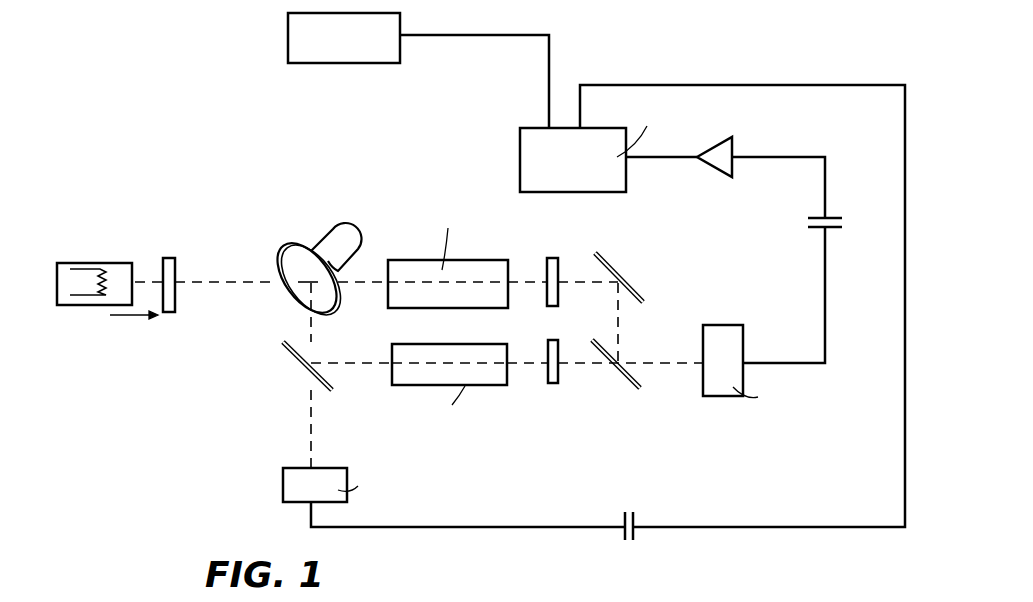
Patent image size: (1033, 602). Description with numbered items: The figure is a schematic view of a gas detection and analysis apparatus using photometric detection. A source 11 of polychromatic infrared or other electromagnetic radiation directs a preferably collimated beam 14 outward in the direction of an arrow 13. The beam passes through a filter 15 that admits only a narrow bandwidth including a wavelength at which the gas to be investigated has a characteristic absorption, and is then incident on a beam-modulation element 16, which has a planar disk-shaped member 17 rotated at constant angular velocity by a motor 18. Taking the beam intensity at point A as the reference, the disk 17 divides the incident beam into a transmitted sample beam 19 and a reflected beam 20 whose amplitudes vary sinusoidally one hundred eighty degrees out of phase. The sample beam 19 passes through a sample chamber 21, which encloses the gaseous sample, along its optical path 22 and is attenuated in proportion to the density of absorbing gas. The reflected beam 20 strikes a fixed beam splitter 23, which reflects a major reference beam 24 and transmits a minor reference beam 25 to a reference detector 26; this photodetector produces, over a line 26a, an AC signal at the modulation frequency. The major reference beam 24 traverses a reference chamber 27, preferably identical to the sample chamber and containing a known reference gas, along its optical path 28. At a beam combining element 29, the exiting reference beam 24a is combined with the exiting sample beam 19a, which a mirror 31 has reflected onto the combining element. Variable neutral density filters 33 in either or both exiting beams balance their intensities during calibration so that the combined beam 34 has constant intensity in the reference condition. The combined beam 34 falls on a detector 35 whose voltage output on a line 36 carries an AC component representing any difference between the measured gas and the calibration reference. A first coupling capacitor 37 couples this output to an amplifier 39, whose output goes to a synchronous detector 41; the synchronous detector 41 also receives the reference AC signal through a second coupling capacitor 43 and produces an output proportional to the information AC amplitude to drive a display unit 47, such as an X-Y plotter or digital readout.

The source 11 is at (105, 263).
The arrow 13 is at (132, 317).
The collimated beam 14 is at (148, 281).
The filter 15 is at (168, 257).
The beam-modulation element 16 is at (309, 252).
The planar disk-shaped member 17 is at (288, 246).
The motor 18 is at (343, 230).
The point A is at (288, 299).
The transmitted or sample beam 19 is at (366, 280).
The exiting sample beam 19a is at (620, 346).
The reflected beam 20 is at (312, 338).
The sample chamber 21 is at (490, 260).
The optical path 22 is at (423, 283).
The beam splitter 23 is at (290, 363).
The major reference beam 24 is at (384, 363).
The exiting reference beam 24a is at (584, 366).
The minor reference beam 25 is at (306, 428).
The reference detector 26 is at (282, 488).
The line 26a is at (455, 527).
The reference chamber 27 is at (480, 386).
The optical path 28 is at (425, 366).
The beam combining element 29 is at (620, 376).
The mirror 31 is at (630, 283).
The variable neutral density filters 33 is at (558, 339).
The combined beam 34 is at (680, 366).
The detector 35 is at (712, 397).
The line 36 is at (824, 280).
The first coupling capacitor 37 is at (810, 228).
The amplifier 39 is at (733, 142).
The synchronous detector 41 is at (528, 128).
The second coupling capacitor 43 is at (624, 540).
The display unit 47 is at (358, 64).